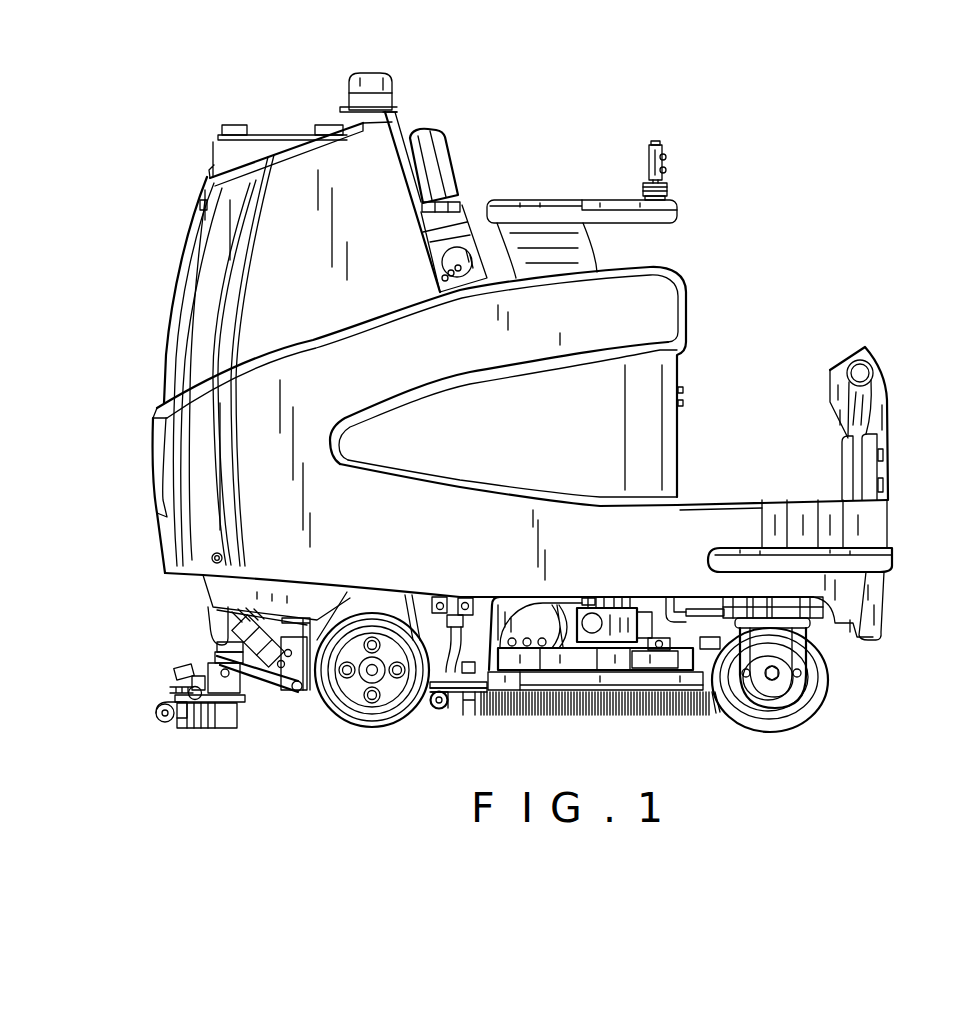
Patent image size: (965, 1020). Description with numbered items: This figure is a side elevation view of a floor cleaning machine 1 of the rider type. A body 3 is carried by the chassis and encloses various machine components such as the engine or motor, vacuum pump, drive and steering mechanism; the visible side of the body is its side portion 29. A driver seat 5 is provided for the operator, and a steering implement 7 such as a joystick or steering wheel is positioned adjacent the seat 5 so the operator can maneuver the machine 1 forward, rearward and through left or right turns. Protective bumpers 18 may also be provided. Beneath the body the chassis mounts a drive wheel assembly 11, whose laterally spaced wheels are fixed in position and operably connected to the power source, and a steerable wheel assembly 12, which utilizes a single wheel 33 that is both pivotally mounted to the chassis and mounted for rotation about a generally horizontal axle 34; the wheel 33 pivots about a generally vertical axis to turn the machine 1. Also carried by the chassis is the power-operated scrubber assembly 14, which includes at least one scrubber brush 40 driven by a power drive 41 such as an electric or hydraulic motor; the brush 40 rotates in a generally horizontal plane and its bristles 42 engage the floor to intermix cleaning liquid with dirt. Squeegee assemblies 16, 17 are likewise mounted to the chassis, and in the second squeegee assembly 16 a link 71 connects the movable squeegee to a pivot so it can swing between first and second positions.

The floor cleaning machine 1 is at (694, 87).
The body 3 is at (648, 302).
The driver seat 5 is at (447, 160).
The steering implement 7 is at (664, 145).
The side portion of the body 29 is at (683, 543).
The protective bumpers 18 is at (893, 558).
The link 71 is at (507, 605).
The power drive 41 is at (615, 618).
The scrubber assembly 14 is at (673, 683).
The scrubber brush 40 is at (548, 688).
The bristles 42 is at (503, 712).
The second squeegee assembly 16 is at (452, 714).
The drive wheel assembly 11 is at (356, 724).
The squeegee assembly 17 is at (152, 695).
The steerable wheel assembly 12 is at (806, 726).
The wheel 33 is at (765, 733).
The axle 34 is at (773, 672).